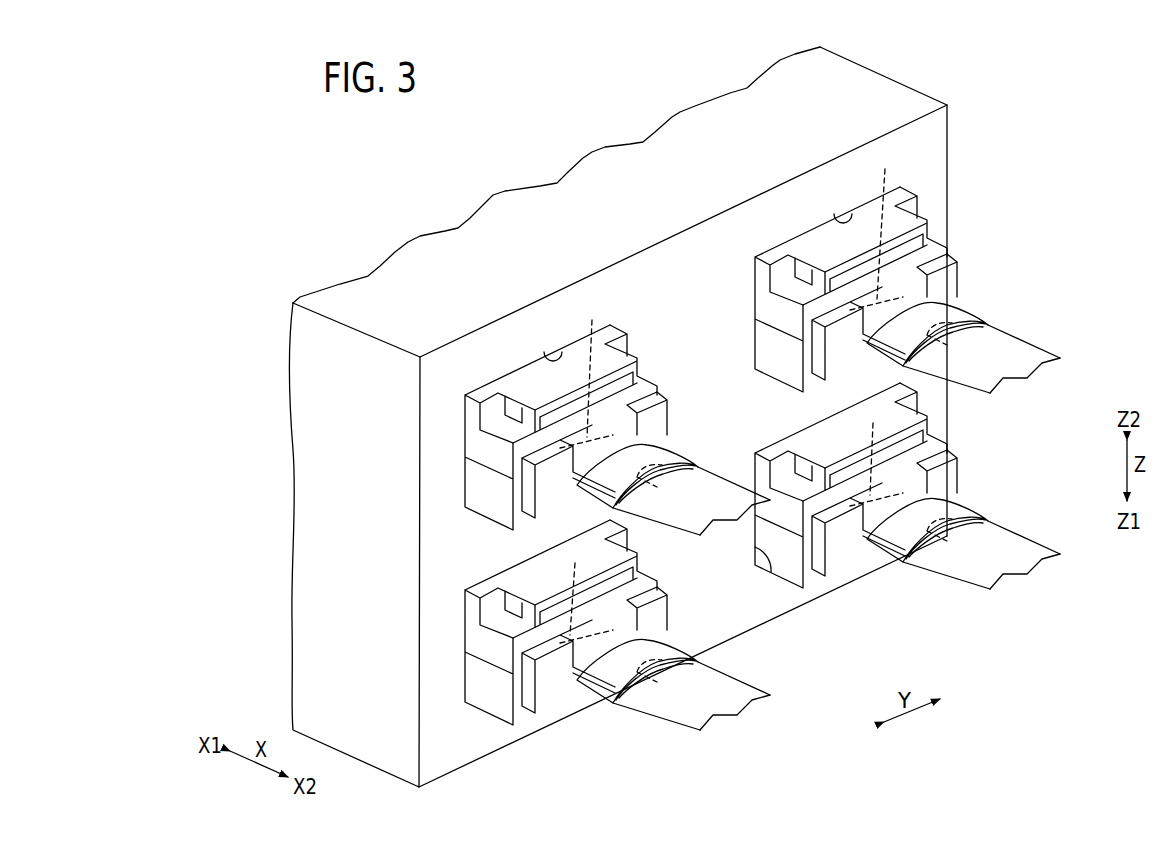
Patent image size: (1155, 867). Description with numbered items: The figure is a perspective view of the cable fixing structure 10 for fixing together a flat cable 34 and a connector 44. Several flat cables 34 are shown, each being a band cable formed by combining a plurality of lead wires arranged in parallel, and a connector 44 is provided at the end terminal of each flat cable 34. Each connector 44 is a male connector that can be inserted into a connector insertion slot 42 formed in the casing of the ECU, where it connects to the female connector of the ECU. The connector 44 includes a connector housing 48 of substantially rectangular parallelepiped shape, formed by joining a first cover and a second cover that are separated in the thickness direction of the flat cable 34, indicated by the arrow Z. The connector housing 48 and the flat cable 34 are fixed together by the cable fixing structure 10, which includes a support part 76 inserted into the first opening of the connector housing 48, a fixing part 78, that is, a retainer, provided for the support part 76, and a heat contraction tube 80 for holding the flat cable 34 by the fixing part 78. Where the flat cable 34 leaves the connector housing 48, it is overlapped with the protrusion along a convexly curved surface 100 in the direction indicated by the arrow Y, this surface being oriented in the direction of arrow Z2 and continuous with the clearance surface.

The cable fixing structure 10 is at (790, 522).
The flat cable 34 is at (880, 562).
The connector insertion slot 42 is at (701, 409).
The connector 44 is at (747, 489).
The connector housing 48 is at (682, 456).
The support part 76 is at (815, 440).
The fixing part 78 is at (731, 393).
The heat contraction tube 80 is at (809, 479).
The convexly curved surface 100 is at (836, 527).